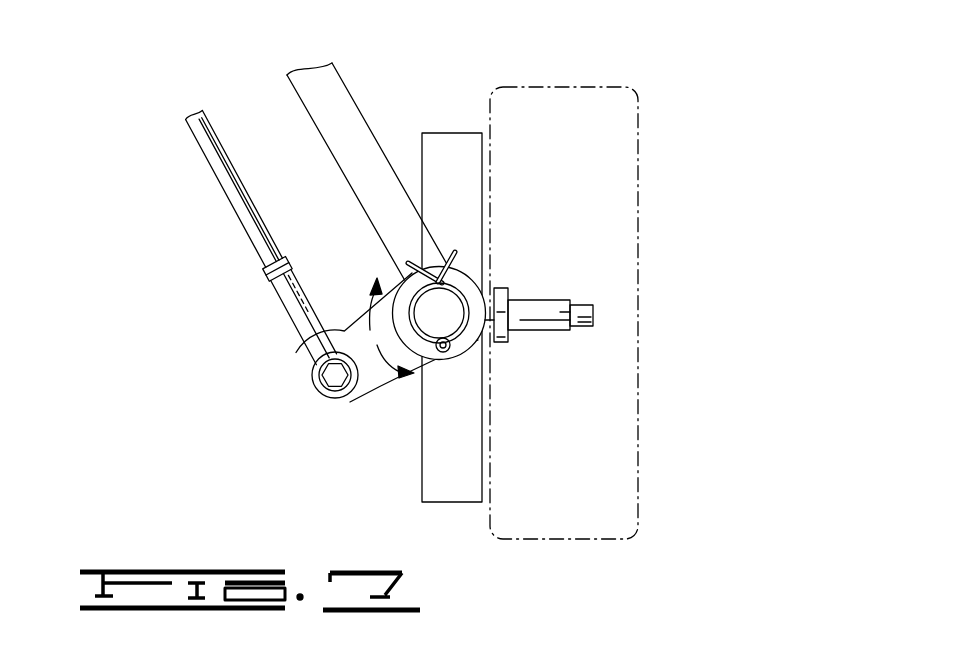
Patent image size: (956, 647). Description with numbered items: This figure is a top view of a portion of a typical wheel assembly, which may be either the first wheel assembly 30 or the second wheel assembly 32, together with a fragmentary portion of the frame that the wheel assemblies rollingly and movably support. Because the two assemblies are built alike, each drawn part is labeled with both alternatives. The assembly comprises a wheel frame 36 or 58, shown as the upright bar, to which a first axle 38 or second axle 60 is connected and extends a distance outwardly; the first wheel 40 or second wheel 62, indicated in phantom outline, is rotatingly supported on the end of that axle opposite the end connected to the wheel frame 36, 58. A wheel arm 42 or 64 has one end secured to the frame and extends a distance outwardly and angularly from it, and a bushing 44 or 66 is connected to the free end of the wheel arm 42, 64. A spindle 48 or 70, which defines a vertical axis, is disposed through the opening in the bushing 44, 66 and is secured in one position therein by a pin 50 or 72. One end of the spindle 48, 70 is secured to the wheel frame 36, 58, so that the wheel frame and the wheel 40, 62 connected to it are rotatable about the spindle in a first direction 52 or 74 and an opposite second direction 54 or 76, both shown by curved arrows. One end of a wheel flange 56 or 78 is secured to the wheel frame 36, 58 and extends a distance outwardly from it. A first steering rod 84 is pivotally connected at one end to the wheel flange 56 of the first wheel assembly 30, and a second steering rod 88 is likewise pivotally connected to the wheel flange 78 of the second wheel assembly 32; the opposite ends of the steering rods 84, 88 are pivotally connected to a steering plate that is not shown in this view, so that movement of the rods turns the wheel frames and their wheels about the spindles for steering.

The first wheel assembly 30 is at (427, 255).
The second wheel assembly 32 is at (455, 90).
The wheel frame 36 is at (373, 318).
The wheel frame 58 is at (437, 470).
The first axle 38 is at (627, 298).
The second axle 60 is at (542, 302).
The first wheel 40 is at (643, 333).
The second wheel 62 is at (638, 520).
The wheel arm 42 is at (223, 255).
The wheel arm 64 is at (362, 177).
The bushing 44 is at (581, 268).
The bushing 66 is at (473, 272).
The spindle 48 is at (589, 340).
The spindle 70 is at (452, 335).
The pin 50 is at (596, 394).
The pin 72 is at (424, 345).
The first direction 52 is at (311, 337).
The first direction 74 is at (380, 317).
The second direction 54 is at (299, 364).
The second direction 76 is at (396, 379).
The wheel flange 56 is at (236, 375).
The wheel flange 78 is at (296, 352).
The first steering rod 84 is at (211, 311).
The second steering rod 88 is at (282, 287).